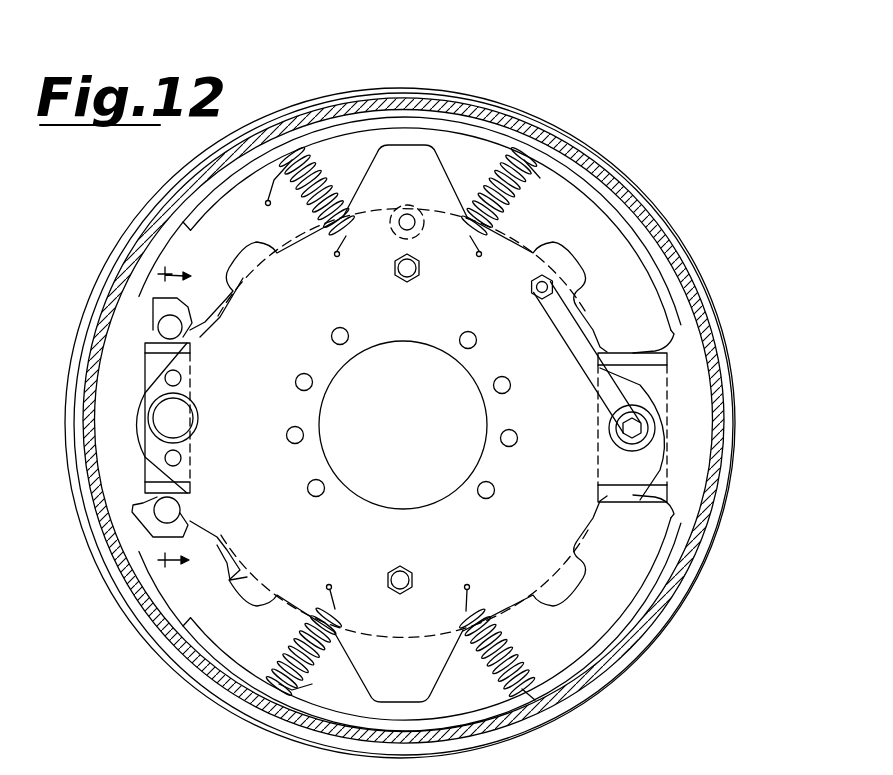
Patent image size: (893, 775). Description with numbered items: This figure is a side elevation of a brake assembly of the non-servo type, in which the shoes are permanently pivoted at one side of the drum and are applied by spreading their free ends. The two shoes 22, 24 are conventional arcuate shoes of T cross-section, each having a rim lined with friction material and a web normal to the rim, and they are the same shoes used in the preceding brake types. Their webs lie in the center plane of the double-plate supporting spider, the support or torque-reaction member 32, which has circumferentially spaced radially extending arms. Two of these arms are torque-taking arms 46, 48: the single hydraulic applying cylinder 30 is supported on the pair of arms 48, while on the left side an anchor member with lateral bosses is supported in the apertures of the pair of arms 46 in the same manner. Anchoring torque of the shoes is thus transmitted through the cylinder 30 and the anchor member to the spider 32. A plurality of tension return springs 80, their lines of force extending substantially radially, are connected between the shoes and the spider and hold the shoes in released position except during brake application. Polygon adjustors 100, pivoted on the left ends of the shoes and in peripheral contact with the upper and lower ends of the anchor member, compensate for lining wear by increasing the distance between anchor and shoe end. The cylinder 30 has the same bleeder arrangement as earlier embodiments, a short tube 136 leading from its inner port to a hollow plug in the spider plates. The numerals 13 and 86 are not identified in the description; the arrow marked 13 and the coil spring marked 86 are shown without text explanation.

The direction arrow 13 is at (186, 418).
The shoe 22 is at (617, 253).
The shoe 24 is at (593, 613).
The hydraulic cylinder 30 is at (667, 377).
The support or torque-reaction member 32 is at (352, 500).
The torque-taking arms 46 is at (137, 413).
The torque-taking arms 48 is at (673, 428).
The tension return springs 80 is at (343, 217).
The spring 86 is at (270, 190).
The polygon adjustors 100 is at (187, 330).
The short tube 136 is at (562, 323).